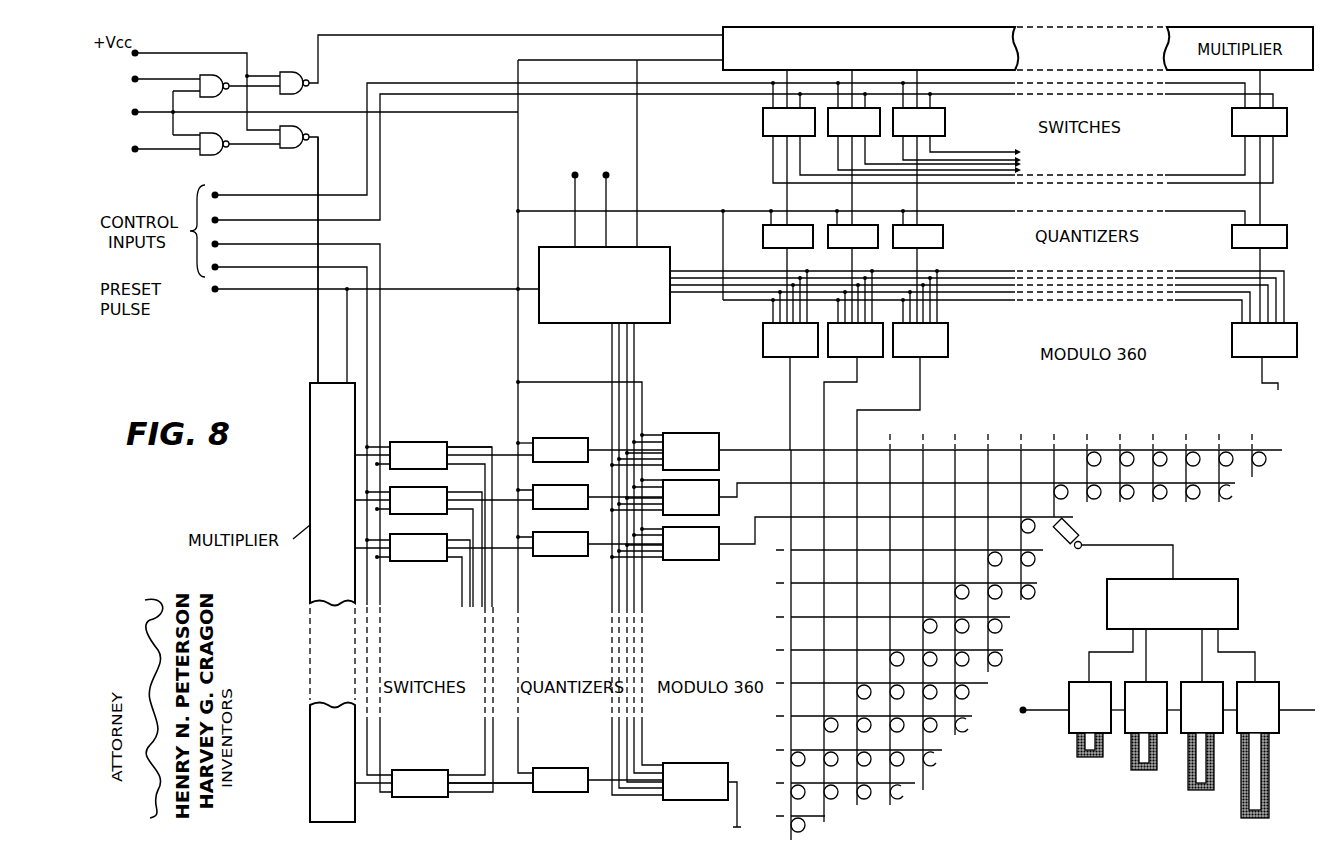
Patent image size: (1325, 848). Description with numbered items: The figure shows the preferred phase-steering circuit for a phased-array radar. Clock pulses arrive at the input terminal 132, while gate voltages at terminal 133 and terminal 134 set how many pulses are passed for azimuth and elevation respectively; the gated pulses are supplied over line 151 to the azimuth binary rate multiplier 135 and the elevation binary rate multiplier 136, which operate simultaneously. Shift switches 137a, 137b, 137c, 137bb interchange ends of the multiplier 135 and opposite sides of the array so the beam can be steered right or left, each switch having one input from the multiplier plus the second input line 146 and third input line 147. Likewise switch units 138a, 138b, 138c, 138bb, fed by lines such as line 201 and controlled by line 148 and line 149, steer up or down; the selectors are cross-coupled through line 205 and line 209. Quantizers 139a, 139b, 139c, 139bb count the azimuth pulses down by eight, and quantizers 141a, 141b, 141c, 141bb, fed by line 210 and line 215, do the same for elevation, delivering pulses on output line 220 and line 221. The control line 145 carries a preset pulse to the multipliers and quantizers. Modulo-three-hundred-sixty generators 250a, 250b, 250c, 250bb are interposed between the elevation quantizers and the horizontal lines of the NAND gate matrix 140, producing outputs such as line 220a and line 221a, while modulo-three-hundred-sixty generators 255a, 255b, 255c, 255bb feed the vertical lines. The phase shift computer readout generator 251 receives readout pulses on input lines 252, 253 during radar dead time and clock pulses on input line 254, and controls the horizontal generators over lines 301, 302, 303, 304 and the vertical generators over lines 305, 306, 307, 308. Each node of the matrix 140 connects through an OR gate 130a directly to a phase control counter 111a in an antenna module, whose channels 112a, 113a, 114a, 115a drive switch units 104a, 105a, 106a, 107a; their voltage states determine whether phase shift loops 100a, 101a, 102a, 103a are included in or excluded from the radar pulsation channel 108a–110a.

The terminal 133 is at (134, 79).
The input terminal 132 is at (134, 112).
The terminal 134 is at (134, 148).
The gate output line 151 is at (318, 175).
The second input line 146 is at (369, 131).
The third input line 147 is at (381, 175).
The line 148 is at (368, 320).
The line 149 is at (381, 362).
The control line 145 is at (305, 292).
The elevation binary rate multiplier 136 is at (346, 482).
The switch unit 138a is at (423, 524).
The switch unit 138b is at (418, 547).
The switch unit 138c is at (412, 570).
The switch unit 138bb is at (442, 757).
The line 205 is at (452, 447).
The line 201 is at (362, 788).
The line 209 is at (460, 774).
The quantizer 141a is at (552, 450).
The quantizer 141b is at (555, 497).
The quantizer 141c is at (555, 544).
The quantizer 141bb is at (560, 780).
The line 210 is at (523, 457).
The output line 220 is at (602, 445).
The line 215 is at (516, 787).
The line 221 is at (595, 778).
The modulo-360 generator 250a is at (664, 451).
The modulo-360 generator 250b is at (700, 496).
The modulo-360 generator 250c is at (700, 538).
The modulo-360 generator 250bb is at (695, 781).
The line 220a is at (733, 450).
The modulo circuit output line 221a is at (737, 815).
The phase shift computer readout generator 251 is at (539, 275).
The input line 252 is at (575, 197).
The input line 253 is at (606, 225).
The input line 254 is at (638, 193).
The line 301 is at (612, 338).
The line 302 is at (619, 360).
The line 303 is at (627, 338).
The line 304 is at (634, 360).
The azimuth binary rate multiplier 135 is at (822, 57).
The shift switch 137a is at (889, 147).
The shift switch 137b is at (921, 147).
The shift switch 137c is at (954, 147).
The shift switch 137bb is at (1226, 147).
The quantizer 139a is at (788, 266).
The quantizer 139b is at (853, 266).
The quantizer 139c is at (918, 266).
The quantizer 139bb is at (1259, 274).
The line 305 is at (978, 272).
The line 306 is at (1130, 278).
The line 307 is at (1028, 301).
The line 308 is at (1195, 300).
The modulo-360 generator 255a is at (790, 359).
The modulo-360 generator 255b is at (853, 376).
The modulo-360 generator 255c is at (902, 393).
The modulo-360 generator 255bb is at (1264, 356).
The NAND gate matrix 140 is at (928, 609).
The OR gate 130a is at (1084, 541).
The counter 111a is at (1190, 582).
The channel 112a is at (1133, 641).
The channel 113a is at (1152, 634).
The channel 114a is at (1202, 662).
The channel 115a is at (1220, 641).
The radar pulsation channel 108a is at (1058, 708).
The radar pulsation channel 110a is at (1280, 708).
The switch unit 104a is at (1090, 707).
The switch unit 105a is at (1139, 707).
The switch unit 106a is at (1195, 707).
The switch unit 107a is at (1251, 707).
The phase shift loop 100a is at (1088, 758).
The phase shift loop 101a is at (1145, 771).
The phase shift loop 102a is at (1210, 790).
The phase shift loop 103a is at (1250, 821).